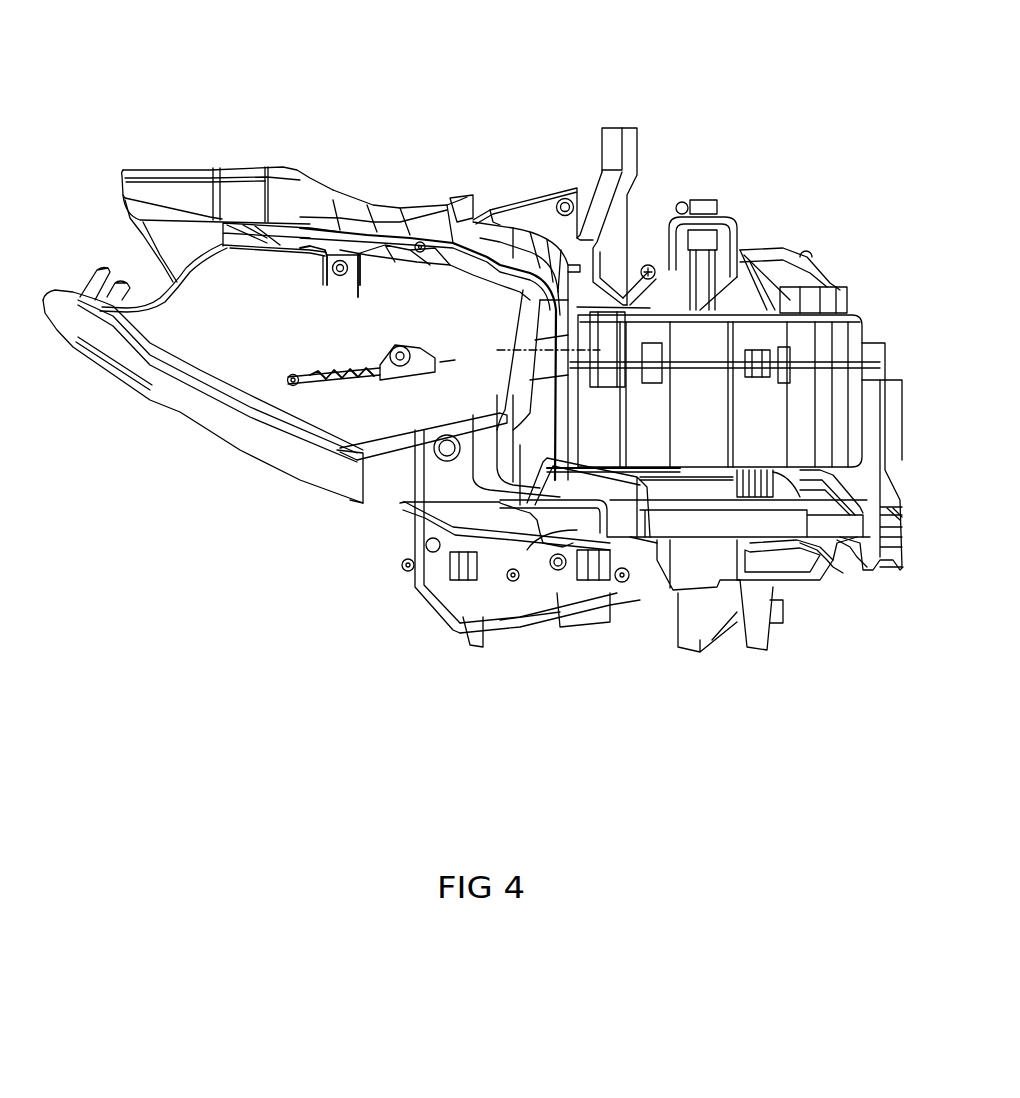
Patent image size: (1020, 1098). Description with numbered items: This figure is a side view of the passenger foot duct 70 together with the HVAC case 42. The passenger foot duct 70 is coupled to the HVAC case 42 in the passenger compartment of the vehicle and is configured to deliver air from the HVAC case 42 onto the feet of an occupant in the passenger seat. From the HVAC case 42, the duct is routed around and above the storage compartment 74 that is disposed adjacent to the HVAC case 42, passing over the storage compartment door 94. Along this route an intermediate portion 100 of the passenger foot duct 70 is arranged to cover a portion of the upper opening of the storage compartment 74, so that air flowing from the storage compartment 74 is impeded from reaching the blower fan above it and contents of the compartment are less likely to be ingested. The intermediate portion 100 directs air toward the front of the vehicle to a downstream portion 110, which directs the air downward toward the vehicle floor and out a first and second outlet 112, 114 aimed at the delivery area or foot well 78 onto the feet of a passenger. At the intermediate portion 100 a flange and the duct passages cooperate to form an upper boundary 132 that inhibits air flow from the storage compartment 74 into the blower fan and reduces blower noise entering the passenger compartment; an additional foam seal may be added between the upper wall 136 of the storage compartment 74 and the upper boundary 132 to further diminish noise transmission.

The HVAC case 42 is at (542, 208).
The passenger foot duct 70 is at (243, 193).
The storage compartment 74 is at (275, 285).
The foot well 78 is at (488, 563).
The storage compartment door 94 is at (180, 407).
The intermediate portion 100 is at (400, 199).
The downstream portion 110 is at (545, 371).
The first outlet 112 is at (402, 508).
The second outlet 114 is at (477, 540).
The upper boundary 132 is at (327, 250).
The upper wall 136 is at (307, 257).